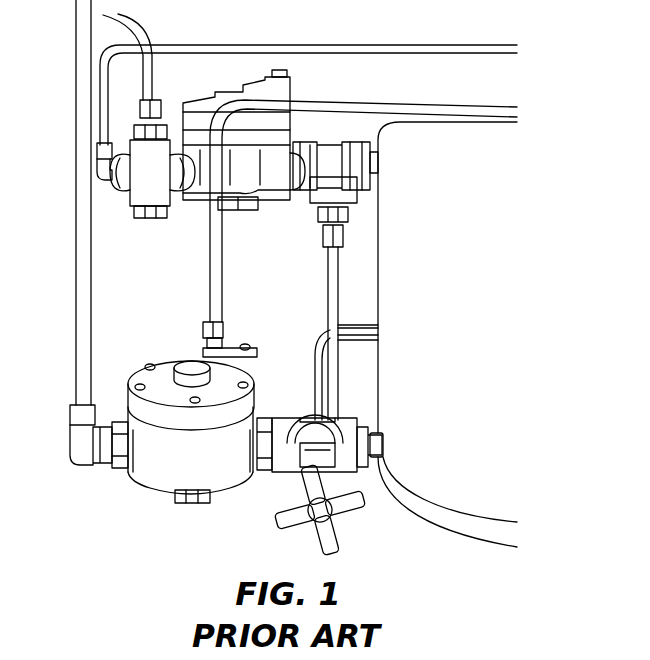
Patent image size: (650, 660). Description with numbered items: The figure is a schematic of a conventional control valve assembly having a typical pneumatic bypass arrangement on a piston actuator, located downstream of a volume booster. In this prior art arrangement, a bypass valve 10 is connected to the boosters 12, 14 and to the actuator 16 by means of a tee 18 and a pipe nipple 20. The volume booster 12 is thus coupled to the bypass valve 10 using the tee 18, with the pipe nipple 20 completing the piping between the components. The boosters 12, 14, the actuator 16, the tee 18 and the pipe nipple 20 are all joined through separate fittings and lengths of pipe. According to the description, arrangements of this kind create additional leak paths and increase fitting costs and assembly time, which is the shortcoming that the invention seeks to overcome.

The bypass valve 10 is at (350, 418).
The volume booster 12 is at (130, 477).
The booster 14 is at (300, 78).
The actuator 16 is at (470, 132).
The tee 18 is at (356, 146).
The pipe nipple 20 is at (330, 263).